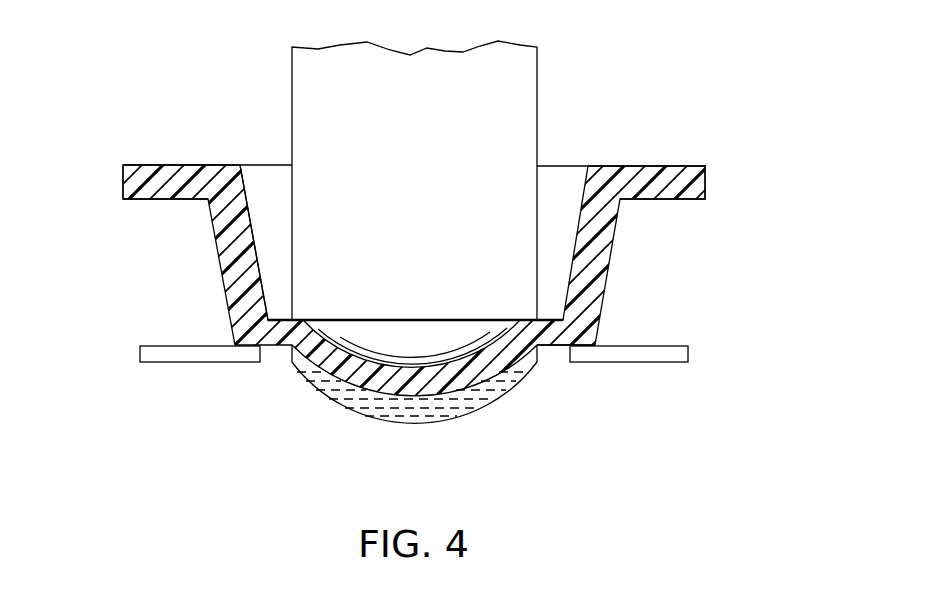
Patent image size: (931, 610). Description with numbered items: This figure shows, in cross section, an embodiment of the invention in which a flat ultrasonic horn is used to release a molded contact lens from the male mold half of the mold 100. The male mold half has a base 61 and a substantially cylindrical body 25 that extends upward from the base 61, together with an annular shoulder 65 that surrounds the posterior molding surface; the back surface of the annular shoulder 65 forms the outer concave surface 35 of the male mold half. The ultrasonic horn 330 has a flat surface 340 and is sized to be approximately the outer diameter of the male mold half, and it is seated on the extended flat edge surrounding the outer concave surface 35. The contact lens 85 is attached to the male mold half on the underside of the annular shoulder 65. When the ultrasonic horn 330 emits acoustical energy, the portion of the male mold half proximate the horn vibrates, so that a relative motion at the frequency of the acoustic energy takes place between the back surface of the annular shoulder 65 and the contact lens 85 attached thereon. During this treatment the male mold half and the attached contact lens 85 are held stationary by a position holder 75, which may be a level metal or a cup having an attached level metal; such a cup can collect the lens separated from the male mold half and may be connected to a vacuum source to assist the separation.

The mold 100 is at (677, 100).
The substantially cylindrical body 25 is at (597, 246).
The outer concave surface 35 is at (277, 317).
The base 61 is at (683, 165).
The annular shoulder 65 is at (582, 347).
The position holder 75 is at (140, 352).
The contact lens 85 is at (483, 410).
The ultrasonic horn 330 is at (292, 90).
The flat surface 340 is at (467, 330).